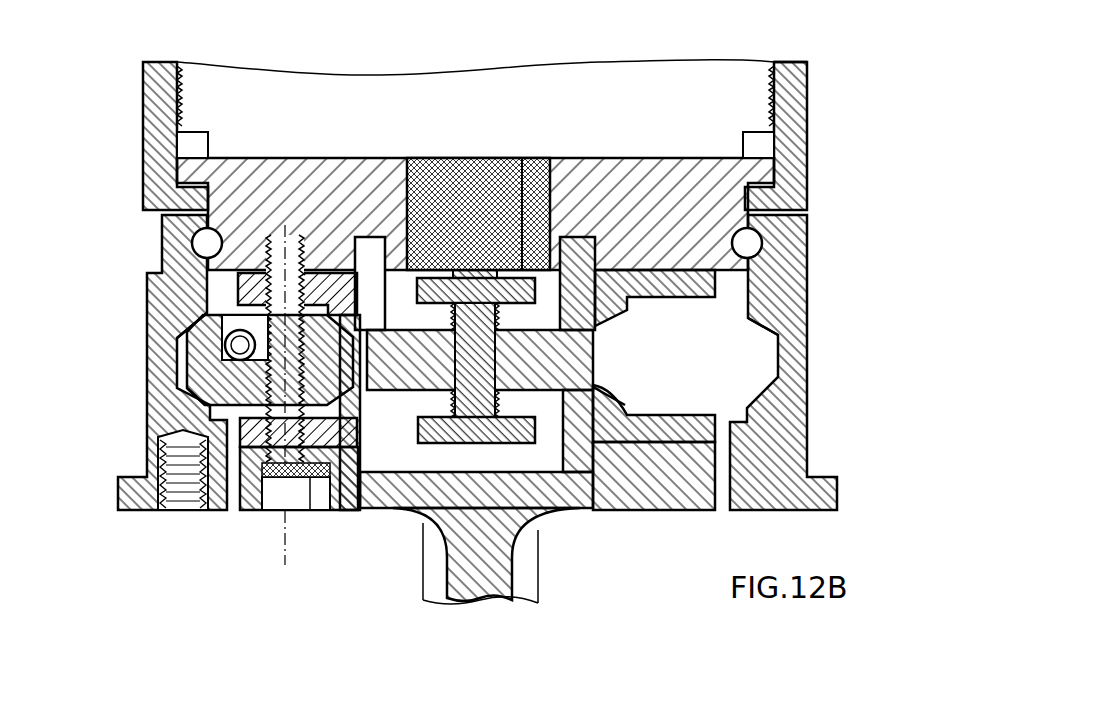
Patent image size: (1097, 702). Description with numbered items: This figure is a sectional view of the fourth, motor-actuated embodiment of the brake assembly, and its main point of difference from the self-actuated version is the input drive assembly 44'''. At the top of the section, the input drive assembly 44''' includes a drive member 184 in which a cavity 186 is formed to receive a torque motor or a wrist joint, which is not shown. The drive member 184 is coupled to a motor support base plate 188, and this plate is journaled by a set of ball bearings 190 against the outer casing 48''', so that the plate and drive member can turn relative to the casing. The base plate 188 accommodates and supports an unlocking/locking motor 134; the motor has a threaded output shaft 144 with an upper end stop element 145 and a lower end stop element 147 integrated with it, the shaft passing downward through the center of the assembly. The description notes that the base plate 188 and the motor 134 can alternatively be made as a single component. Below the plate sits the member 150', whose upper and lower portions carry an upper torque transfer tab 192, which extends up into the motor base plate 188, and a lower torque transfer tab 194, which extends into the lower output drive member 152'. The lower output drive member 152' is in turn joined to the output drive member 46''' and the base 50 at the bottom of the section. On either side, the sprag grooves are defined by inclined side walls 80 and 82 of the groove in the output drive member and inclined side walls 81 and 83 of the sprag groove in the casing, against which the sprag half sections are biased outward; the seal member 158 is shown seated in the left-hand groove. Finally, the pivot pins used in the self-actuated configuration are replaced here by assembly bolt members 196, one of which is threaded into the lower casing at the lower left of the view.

The input drive assembly 44''' is at (524, 136).
The output drive member 46''' is at (519, 564).
The outer casing 48''' is at (512, 362).
The base 50 is at (513, 525).
The inclined side wall 80 is at (571, 306).
The inclined side wall 81 is at (472, 292).
The inclined side wall 82 is at (572, 489).
The inclined side wall 83 is at (482, 419).
The unlocking/locking motor 134 is at (486, 151).
The threaded output shaft 144 is at (453, 464).
The upper end stop element 145 is at (503, 260).
The lower end stop element 147 is at (428, 519).
The member 150' is at (755, 330).
The lower output drive member 152' is at (647, 466).
The seal 158 is at (205, 202).
The drive member 184 is at (829, 31).
The cavity 186 is at (475, 53).
The motor support base plate 188 is at (458, 146).
The ball bearings 190 is at (483, 230).
The upper torque transfer tab 192 is at (625, 165).
The lower torque transfer tab 194 is at (644, 505).
The assembly bolt members 196 is at (215, 496).